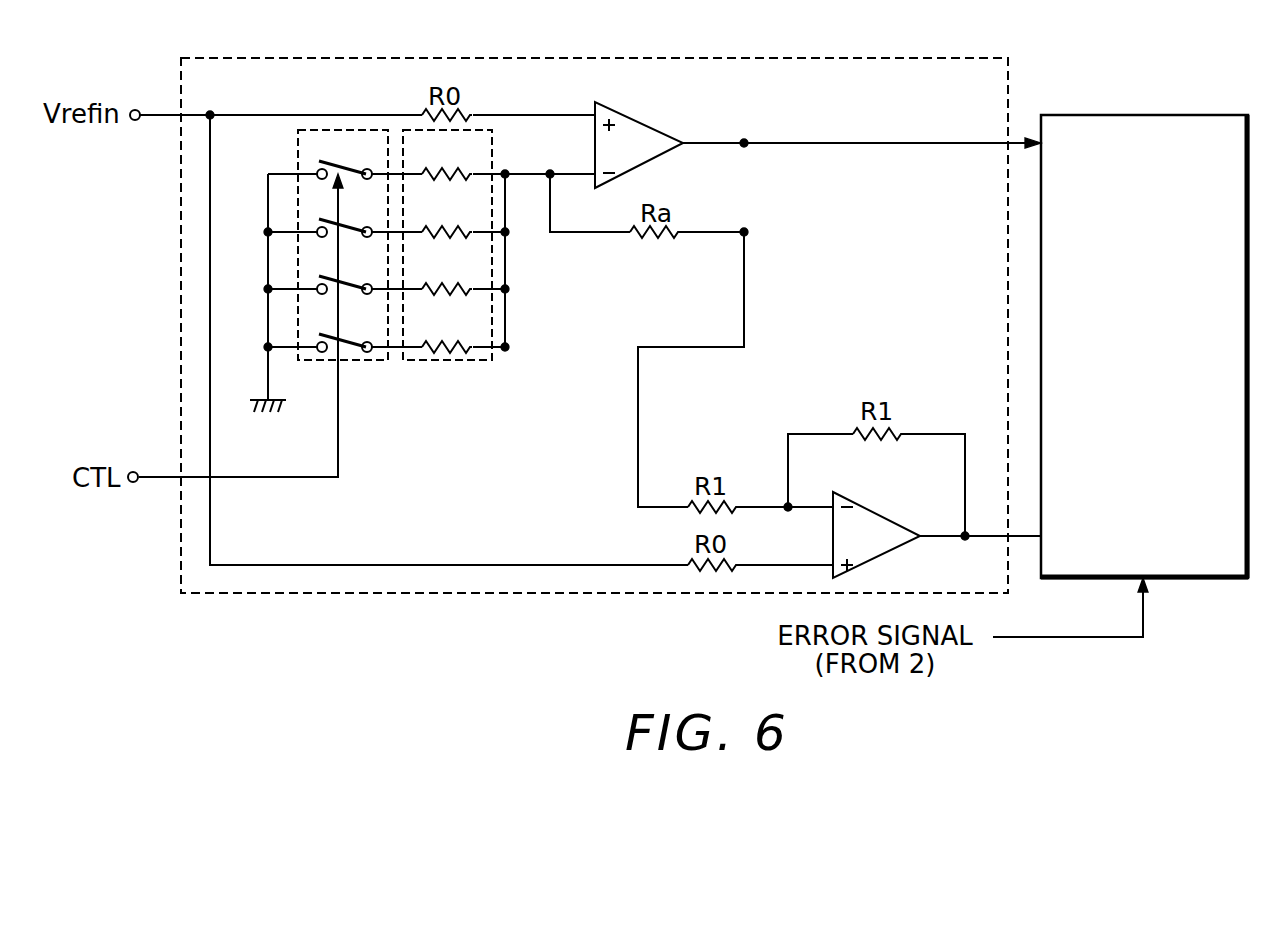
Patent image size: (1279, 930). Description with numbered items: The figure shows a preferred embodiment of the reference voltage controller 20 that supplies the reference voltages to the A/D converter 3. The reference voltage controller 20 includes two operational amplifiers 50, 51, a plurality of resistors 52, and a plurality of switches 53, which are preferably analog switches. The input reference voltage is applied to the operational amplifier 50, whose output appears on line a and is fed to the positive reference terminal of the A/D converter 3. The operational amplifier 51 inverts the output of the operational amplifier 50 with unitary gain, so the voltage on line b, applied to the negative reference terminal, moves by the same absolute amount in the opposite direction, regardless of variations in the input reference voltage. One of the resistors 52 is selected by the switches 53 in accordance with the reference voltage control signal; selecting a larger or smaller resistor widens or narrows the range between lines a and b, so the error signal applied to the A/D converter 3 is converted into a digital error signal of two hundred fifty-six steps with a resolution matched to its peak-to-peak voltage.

The reference voltage controller 20 is at (607, 57).
The operational amplifier 50 is at (640, 120).
The operational amplifier 51 is at (872, 507).
The resistors 52 is at (448, 362).
The switches 53 is at (373, 362).
The A/D converter 3 is at (1144, 114).
The line a is at (849, 142).
The line b is at (990, 534).